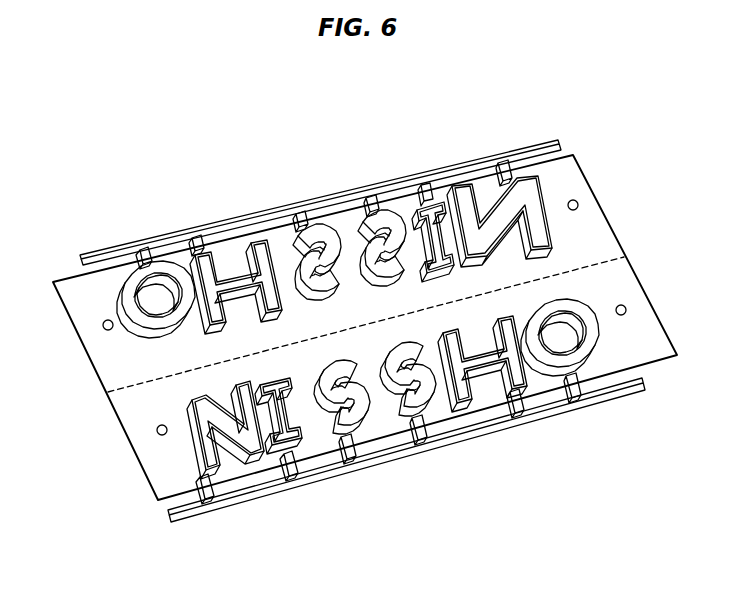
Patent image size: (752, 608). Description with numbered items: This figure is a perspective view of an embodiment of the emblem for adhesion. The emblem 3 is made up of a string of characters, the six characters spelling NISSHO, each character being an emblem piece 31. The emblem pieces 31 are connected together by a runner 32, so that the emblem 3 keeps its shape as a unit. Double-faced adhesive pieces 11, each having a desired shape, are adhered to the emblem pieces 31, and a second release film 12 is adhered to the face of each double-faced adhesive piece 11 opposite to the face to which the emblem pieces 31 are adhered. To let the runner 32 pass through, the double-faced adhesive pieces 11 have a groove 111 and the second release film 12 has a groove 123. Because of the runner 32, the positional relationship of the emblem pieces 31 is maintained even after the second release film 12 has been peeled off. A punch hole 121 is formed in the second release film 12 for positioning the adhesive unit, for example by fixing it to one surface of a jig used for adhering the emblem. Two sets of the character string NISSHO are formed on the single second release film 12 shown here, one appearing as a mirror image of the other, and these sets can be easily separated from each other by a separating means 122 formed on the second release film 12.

The emblem 3 is at (294, 199).
The emblem pieces 31 is at (537, 217).
The runner 32 is at (403, 447).
The double-faced adhesive pieces 11 is at (551, 378).
The groove 111 is at (303, 453).
The second release film 12 is at (108, 363).
The punch hole 121 is at (161, 437).
The separating means 122 is at (132, 392).
The groove 123 is at (287, 462).